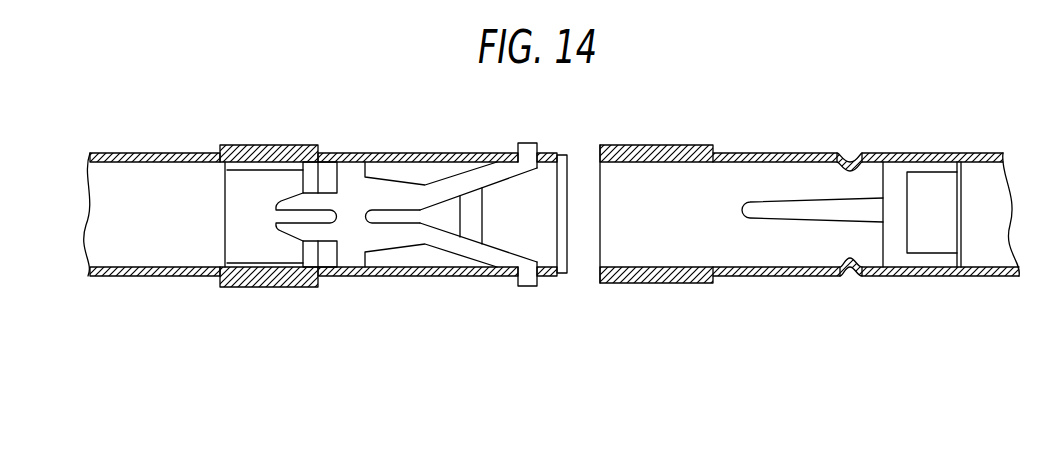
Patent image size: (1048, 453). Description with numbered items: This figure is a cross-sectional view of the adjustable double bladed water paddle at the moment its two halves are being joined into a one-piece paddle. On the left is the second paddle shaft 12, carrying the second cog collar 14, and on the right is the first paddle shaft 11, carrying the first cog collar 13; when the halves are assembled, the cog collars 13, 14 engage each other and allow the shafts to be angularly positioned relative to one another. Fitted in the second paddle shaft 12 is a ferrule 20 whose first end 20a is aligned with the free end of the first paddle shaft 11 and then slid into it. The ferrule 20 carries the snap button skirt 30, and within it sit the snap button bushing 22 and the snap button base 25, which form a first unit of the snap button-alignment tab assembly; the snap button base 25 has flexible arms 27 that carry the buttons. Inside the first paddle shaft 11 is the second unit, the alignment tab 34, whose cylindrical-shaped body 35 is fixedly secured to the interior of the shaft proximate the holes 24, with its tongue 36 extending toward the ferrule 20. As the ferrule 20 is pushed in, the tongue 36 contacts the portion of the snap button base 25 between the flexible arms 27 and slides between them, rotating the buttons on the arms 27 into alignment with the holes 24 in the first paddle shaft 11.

The first paddle shaft 11 is at (757, 275).
The second paddle shaft 12 is at (142, 278).
The first cog collar 13 is at (643, 145).
The second cog collar 14 is at (267, 152).
The ferrule 20 is at (408, 152).
The first end of ferrule 20a is at (498, 152).
The snap button bushing 22 is at (258, 268).
The holes 24 is at (850, 155).
The snap button base 25 is at (393, 257).
The flexible arms 27 is at (497, 184).
The snap button skirt 30 is at (540, 233).
The alignment tab 34 is at (870, 181).
The cylindrical-shaped body 35 is at (892, 250).
The tongue 36 is at (780, 207).